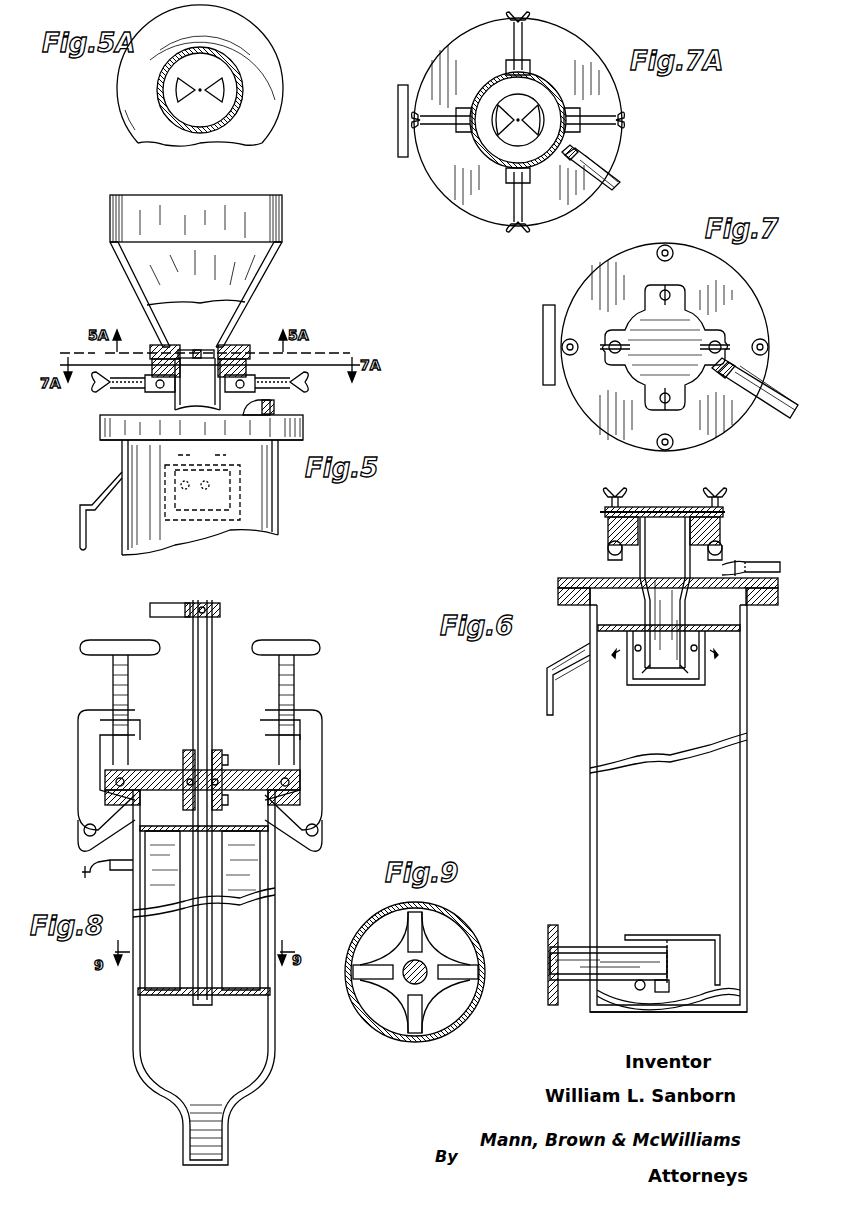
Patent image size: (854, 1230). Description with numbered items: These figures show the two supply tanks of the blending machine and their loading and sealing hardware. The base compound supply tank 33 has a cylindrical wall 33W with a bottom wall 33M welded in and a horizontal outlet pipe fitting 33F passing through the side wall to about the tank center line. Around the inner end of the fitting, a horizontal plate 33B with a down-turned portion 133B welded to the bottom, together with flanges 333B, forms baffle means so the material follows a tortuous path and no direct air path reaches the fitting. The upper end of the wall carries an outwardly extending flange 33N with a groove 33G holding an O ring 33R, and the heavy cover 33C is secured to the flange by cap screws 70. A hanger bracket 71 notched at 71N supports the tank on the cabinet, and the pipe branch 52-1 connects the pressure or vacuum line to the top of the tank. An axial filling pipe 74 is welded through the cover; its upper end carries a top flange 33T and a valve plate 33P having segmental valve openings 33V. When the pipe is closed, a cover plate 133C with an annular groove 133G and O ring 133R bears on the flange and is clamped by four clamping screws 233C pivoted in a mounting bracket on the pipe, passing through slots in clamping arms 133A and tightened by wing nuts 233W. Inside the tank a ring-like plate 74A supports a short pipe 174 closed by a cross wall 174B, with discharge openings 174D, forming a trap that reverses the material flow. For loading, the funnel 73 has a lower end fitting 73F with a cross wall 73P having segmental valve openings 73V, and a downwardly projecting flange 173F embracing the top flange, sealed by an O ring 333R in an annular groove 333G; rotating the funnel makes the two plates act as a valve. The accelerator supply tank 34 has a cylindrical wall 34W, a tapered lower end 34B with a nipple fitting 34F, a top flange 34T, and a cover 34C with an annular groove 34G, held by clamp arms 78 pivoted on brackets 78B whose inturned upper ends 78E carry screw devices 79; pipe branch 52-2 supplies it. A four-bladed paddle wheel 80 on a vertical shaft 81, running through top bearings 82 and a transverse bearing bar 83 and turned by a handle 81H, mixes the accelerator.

In FIG. 5, the base compound supply tank 33 is at (262, 518).
In FIG. 6, the base compound supply tank 33 is at (585, 812).
In FIG. 6, the horizontal baffle plate 33B is at (672, 935).
In FIG. 7A, the cover 33C is at (447, 55).
In FIG. 7, the cover 33C is at (595, 410).
In FIG. 6, the cover 33C is at (630, 588).
In FIG. 6, the outlet pipe fitting 33F is at (570, 930).
In FIG. 6, the groove 33G is at (760, 605).
In FIG. 6, the bottom wall 33M is at (720, 1000).
In FIG. 6, the outwardly extending flange 33N is at (745, 612).
In FIG. 7A, the valve plate 33P is at (522, 102).
In FIG. 6, the valve plate 33P is at (673, 517).
In FIG. 6, the O ring 33R is at (778, 595).
In FIG. 6, the top flange 33T is at (610, 532).
In FIG. 5, the valve openings 33V is at (197, 384).
In FIG. 7A, the valve openings 33V is at (505, 130).
In FIG. 6, the valve openings 33V is at (665, 592).
In FIG. 6, the cylindrical wall 33W is at (590, 750).
In FIG. 8, the accelerator supply tank 34 is at (275, 870).
In FIG. 9, the accelerator supply tank 34 is at (360, 1028).
In FIG. 8, the tapered lower end 34B is at (163, 1090).
In FIG. 8, the cover 34C is at (230, 762).
In FIG. 8, the nipple fitting 34F is at (190, 1142).
In FIG. 8, the annular groove 34G is at (285, 780).
In FIG. 8, the top flange 34T is at (300, 798).
In FIG. 8, the cylindrical wall 34W is at (270, 928).
In FIG. 9, the cylindrical wall 34W is at (445, 935).
In FIG. 5, the pipe branch 52-1 is at (278, 407).
In FIG. 7A, the pipe branch 52-1 is at (620, 180).
In FIG. 7, the pipe branch 52-1 is at (765, 405).
In FIG. 6, the pipe branch 52-1 is at (750, 562).
In FIG. 8, the pipe branch 52-2 is at (98, 862).
In FIG. 7, the cap screws 70 is at (658, 250).
In FIG. 6, the cap screws 70 is at (565, 580).
In FIG. 6, the hanger bracket 71 is at (547, 680).
In FIG. 6, the notch 71N is at (548, 702).
In FIG. 5A, the funnel 73 is at (240, 46).
In FIG. 5, the funnel 73 is at (258, 252).
In FIG. 5, the lower end fitting 73F is at (232, 345).
In FIG. 5A, the cross wall 73P is at (212, 118).
In FIG. 5, the cross wall 73P is at (203, 350).
In FIG. 5A, the segmental valve openings 73V is at (220, 90).
In FIG. 5, the segmental valve openings 73V is at (190, 350).
In FIG. 6, the filling pipe 74 is at (688, 620).
In FIG. 6, the ring-like plate 74A is at (725, 632).
In FIG. 8, the clamp arms 78 is at (320, 758).
In FIG. 8, the brackets 78B is at (295, 838).
In FIG. 8, the inturned upper ends 78E is at (300, 715).
In FIG. 8, the screw devices 79 is at (295, 675).
In FIG. 8, the paddle wheel 80 is at (160, 972).
In FIG. 9, the paddle wheel 80 is at (452, 1005).
In FIG. 8, the vertical shaft 81 is at (210, 645).
In FIG. 9, the vertical shaft 81 is at (410, 985).
In FIG. 8, the handle 81H is at (150, 612).
In FIG. 8, the top bearings 82 is at (183, 750).
In FIG. 8, the transverse bearing bar 83 is at (170, 998).
In FIG. 7, the clamping arms 133A is at (718, 335).
In FIG. 6, the clamping arms 133A is at (608, 512).
In FIG. 6, the down-turned portion 133B is at (720, 955).
In FIG. 7, the cover plate 133C is at (665, 347).
In FIG. 6, the cover plate 133C is at (650, 507).
In FIG. 6, the annular groove 133G is at (718, 510).
In FIG. 6, the O ring 133R is at (600, 515).
In FIG. 5A, the downwardly projecting flange 173F is at (158, 85).
In FIG. 5, the downwardly projecting flange 173F is at (243, 372).
In FIG. 6, the short pipe 174 is at (710, 680).
In FIG. 6, the cross wall 174B is at (650, 690).
In FIG. 6, the discharge openings 174D is at (705, 648).
In FIG. 5, the clamping screws 233C is at (307, 384).
In FIG. 7A, the clamping screws 233C is at (615, 150).
In FIG. 6, the clamping screws 233C is at (722, 530).
In FIG. 5, the wing nuts 233W is at (302, 392).
In FIG. 7A, the wing nuts 233W is at (622, 125).
In FIG. 7, the wing nuts 233W is at (667, 290).
In FIG. 6, the wing nuts 233W is at (608, 490).
In FIG. 6, the flanges 333B is at (662, 995).
In FIG. 5, the annular groove 333G is at (152, 345).
In FIG. 5, the O ring 333R is at (160, 370).